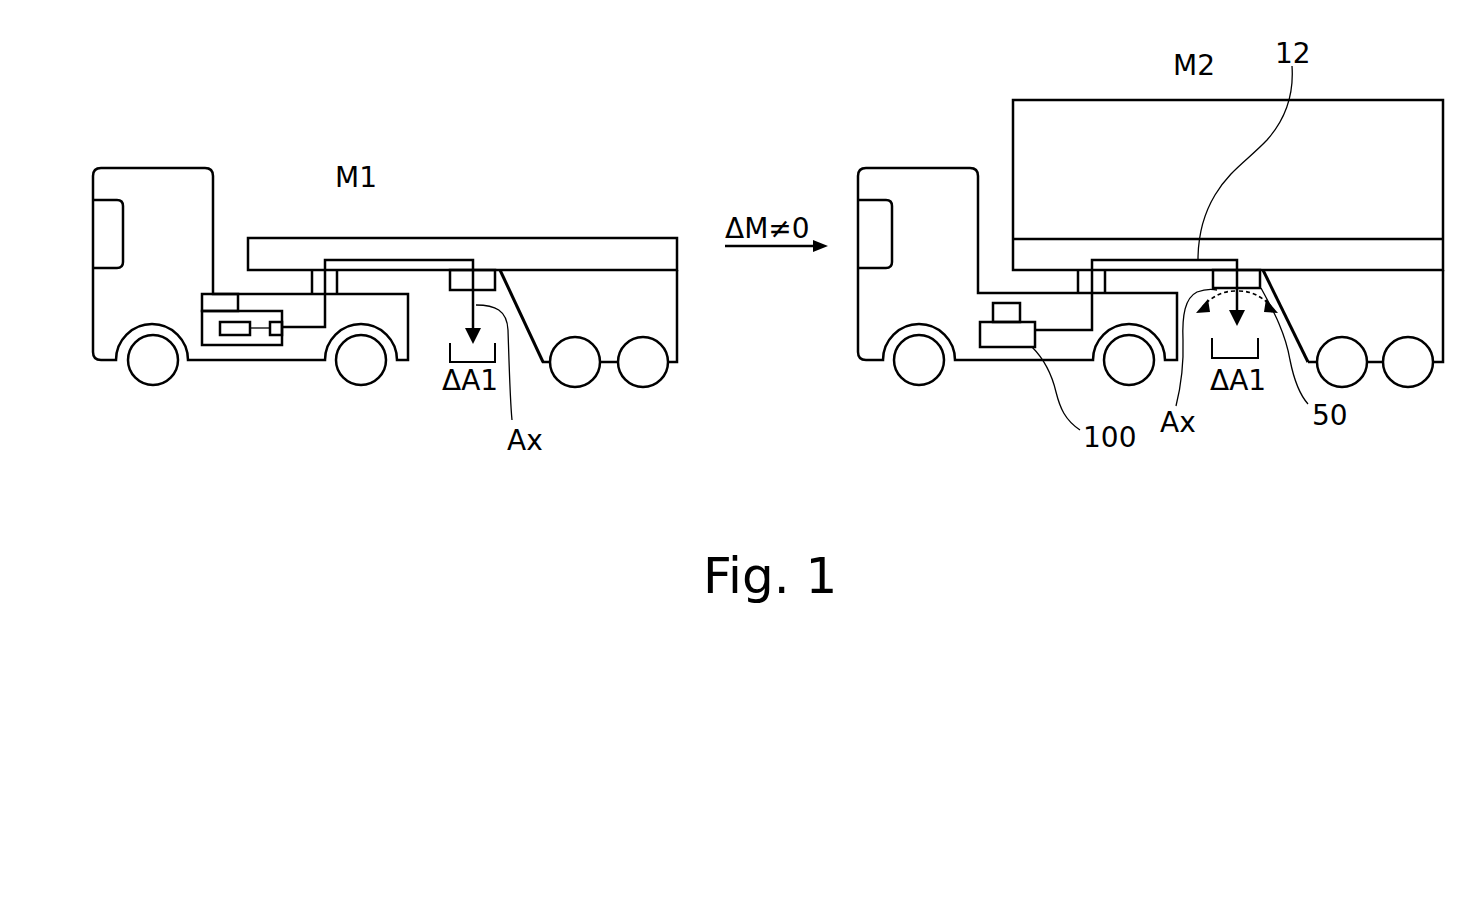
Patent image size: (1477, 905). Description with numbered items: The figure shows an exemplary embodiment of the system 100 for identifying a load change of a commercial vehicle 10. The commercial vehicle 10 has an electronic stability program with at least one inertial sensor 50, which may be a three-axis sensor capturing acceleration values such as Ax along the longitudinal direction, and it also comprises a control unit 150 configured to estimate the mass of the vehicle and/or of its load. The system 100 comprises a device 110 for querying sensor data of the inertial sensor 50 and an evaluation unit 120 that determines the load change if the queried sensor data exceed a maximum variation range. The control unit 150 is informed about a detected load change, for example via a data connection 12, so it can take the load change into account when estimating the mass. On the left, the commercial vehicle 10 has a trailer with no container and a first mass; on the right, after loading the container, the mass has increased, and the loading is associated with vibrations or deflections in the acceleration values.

The commercial vehicle 10 is at (153, 168).
The data connection 12 is at (408, 260).
The inertial sensor 50 is at (502, 290).
The system 100 is at (264, 346).
The device for querying sensor data 110 is at (275, 336).
The evaluation unit 120 is at (233, 345).
The control unit 150 is at (213, 292).